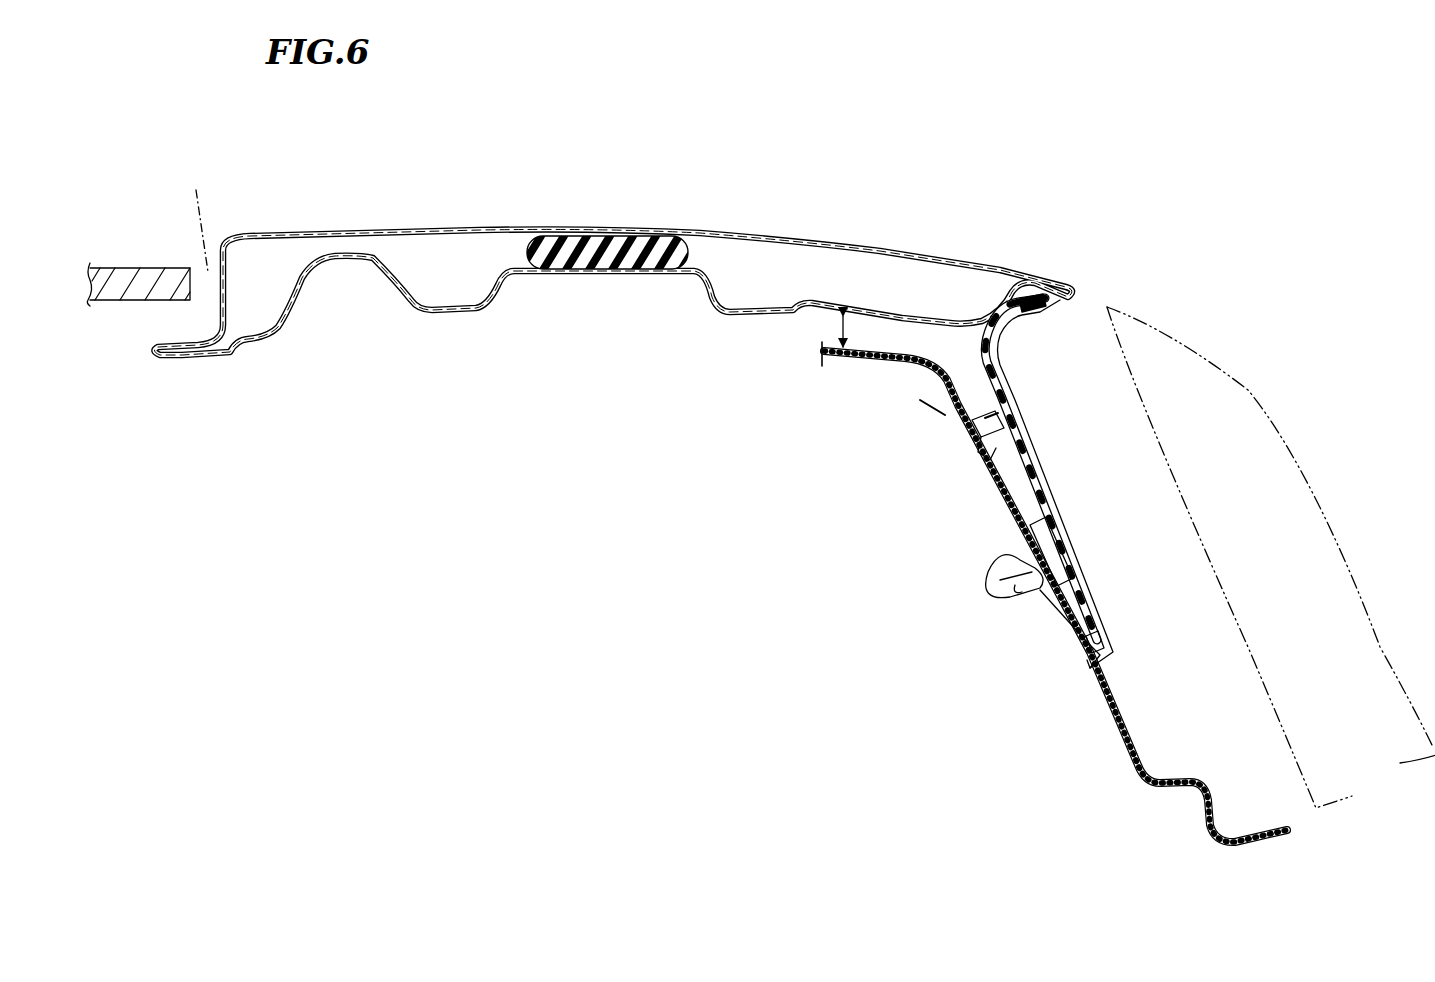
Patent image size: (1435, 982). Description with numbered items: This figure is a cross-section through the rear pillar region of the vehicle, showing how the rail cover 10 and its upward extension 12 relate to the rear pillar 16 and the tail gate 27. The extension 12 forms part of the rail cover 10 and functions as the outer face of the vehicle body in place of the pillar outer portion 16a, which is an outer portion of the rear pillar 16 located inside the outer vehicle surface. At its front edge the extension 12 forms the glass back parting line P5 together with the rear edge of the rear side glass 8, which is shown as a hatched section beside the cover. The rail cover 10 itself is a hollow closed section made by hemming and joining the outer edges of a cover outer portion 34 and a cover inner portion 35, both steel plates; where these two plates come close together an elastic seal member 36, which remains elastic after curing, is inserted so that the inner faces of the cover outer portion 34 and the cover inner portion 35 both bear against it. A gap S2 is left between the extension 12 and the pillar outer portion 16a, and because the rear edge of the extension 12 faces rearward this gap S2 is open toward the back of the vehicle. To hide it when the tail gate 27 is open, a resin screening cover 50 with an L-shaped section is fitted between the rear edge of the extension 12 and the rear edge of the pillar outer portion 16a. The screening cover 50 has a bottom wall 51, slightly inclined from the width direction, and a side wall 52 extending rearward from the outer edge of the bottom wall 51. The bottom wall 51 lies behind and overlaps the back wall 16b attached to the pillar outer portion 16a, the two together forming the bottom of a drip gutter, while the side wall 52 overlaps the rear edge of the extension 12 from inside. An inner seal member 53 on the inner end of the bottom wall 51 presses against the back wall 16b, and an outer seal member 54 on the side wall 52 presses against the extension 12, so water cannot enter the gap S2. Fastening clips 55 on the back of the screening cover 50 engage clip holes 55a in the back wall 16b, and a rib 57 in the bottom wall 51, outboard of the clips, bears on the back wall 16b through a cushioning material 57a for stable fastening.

The rear side glass 8 is at (132, 268).
The glass back parting line P5 is at (191, 211).
The rail cover 10 is at (680, 235).
The extension 12 is at (818, 230).
The rear pillar 16 is at (1054, 498).
The pillar outer portion 16a is at (886, 352).
The back wall 16b is at (1000, 512).
The tail gate 27 is at (1252, 387).
The cover outer portion 34 is at (731, 228).
The cover inner portion 35 is at (752, 318).
The elastic seal member 36 is at (609, 238).
The screening cover 50 is at (1052, 443).
The bottom wall 51 is at (1012, 420).
The side wall 52 is at (1043, 318).
The inner seal member 53 is at (1090, 640).
The outer seal member 54 is at (1030, 297).
The fastening clip 55 is at (995, 600).
The clip hole 55a is at (1020, 595).
The rib 57 is at (985, 452).
The cushioning material 57a is at (988, 425).
The gap S2 is at (845, 330).